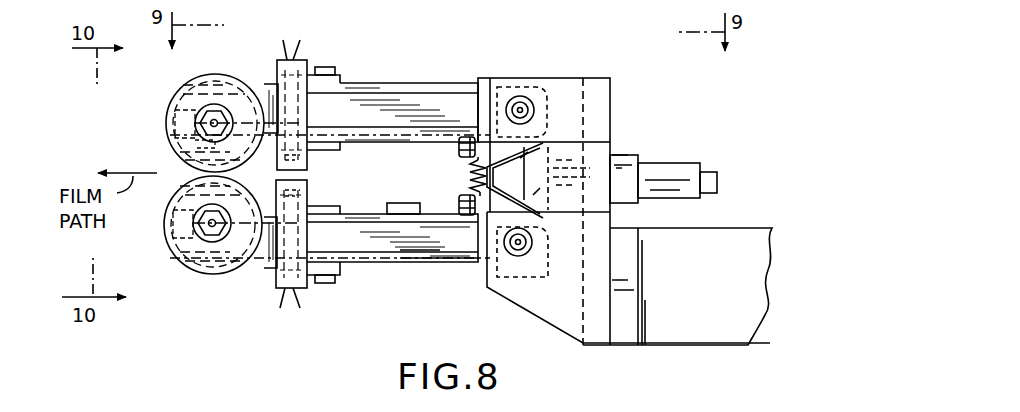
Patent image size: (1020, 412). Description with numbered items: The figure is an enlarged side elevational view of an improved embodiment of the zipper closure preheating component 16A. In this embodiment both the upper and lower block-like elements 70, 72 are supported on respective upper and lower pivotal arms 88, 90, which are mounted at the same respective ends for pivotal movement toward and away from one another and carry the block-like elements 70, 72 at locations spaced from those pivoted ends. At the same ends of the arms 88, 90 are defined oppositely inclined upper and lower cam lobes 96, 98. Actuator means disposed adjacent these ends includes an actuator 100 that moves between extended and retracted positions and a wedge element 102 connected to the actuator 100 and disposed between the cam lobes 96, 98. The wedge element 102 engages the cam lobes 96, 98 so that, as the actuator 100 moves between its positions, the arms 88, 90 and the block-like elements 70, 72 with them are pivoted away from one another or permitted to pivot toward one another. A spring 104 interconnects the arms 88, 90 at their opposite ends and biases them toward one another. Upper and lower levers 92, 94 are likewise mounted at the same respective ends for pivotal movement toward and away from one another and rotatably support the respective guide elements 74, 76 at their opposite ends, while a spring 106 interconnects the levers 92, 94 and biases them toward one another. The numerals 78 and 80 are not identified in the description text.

The preheating component 16A is at (666, 107).
The upper block-like element 70 is at (305, 165).
The lower block-like element 72 is at (305, 188).
The upper guide element 74 is at (184, 84).
The lower guide element 76 is at (205, 272).
The upper roller bearing 78 is at (176, 102).
The lower roller bearing 80 is at (180, 205).
The upper arm 88 is at (385, 95).
The lower arm 90 is at (403, 250).
The upper lever 92 is at (264, 88).
The lower lever 94 is at (258, 268).
The upper cam lobe 96 is at (462, 147).
The lower cam lobe 98 is at (490, 192).
The actuator 100 is at (672, 170).
The wedge element 102 is at (537, 178).
The spring 104 is at (480, 178).
The spring 106 is at (182, 168).